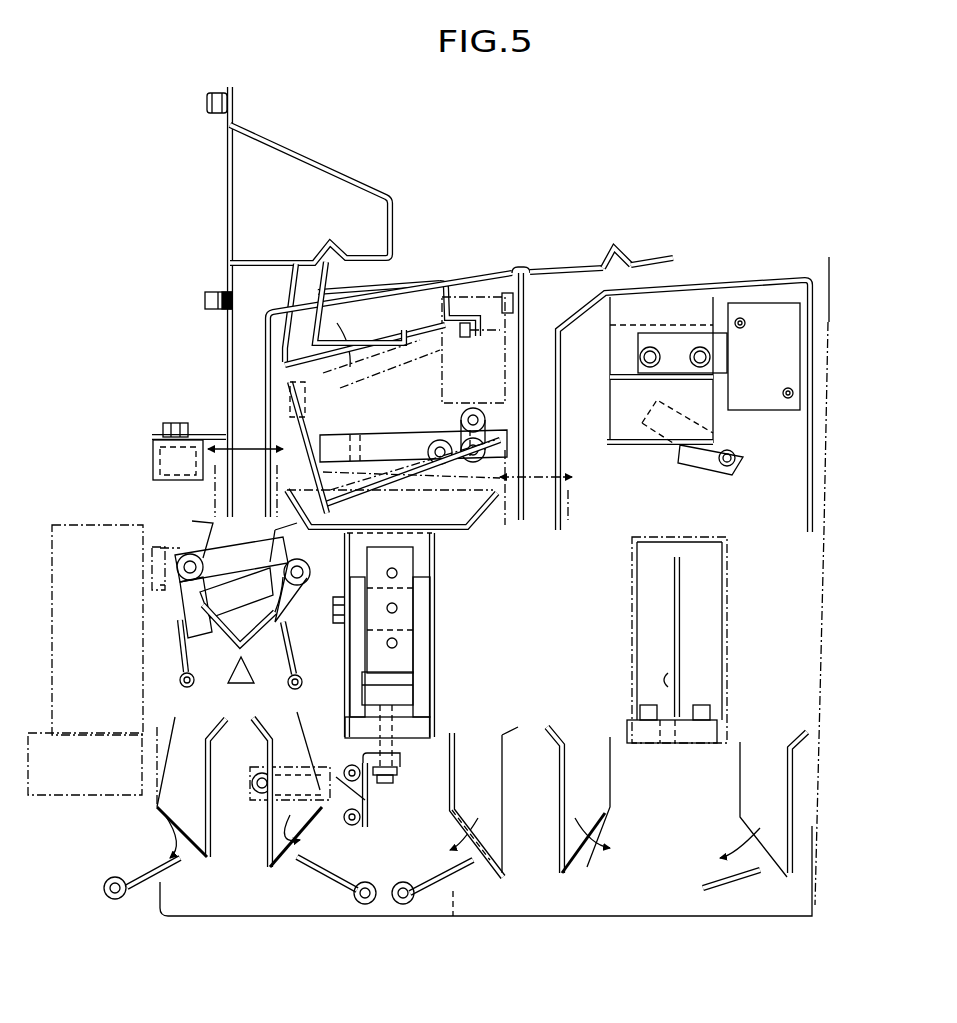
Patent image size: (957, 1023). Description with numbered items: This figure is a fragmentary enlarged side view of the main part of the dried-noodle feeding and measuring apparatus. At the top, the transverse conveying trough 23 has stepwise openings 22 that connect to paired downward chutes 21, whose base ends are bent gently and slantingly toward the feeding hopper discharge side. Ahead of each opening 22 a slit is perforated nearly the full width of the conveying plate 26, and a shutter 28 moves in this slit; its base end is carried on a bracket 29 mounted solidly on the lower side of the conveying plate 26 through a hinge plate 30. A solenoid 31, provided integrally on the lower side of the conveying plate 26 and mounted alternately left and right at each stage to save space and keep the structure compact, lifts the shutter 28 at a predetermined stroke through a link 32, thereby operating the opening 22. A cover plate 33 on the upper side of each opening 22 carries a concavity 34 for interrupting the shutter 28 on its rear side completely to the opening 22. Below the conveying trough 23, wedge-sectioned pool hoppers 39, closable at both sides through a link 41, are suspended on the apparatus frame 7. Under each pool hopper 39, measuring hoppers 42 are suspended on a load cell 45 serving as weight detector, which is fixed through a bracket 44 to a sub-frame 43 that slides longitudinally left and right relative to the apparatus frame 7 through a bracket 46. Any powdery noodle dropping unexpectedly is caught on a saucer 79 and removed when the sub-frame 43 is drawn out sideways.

The apparatus frame 7 is at (152, 447).
The downward chute 21 is at (557, 458).
The opening 22 is at (388, 277).
The transverse conveying trough 23 is at (573, 252).
The conveying plate 26 is at (492, 270).
The shutter 28 is at (282, 278).
The bracket 29 is at (443, 300).
The hinge plate 30 is at (433, 332).
The solenoid 31 is at (494, 376).
The link 32 is at (398, 450).
The cover plate 33 is at (660, 258).
The concavity 34 is at (618, 255).
The pool hopper 39 is at (203, 545).
The link 41 is at (177, 653).
The measuring hopper 42 is at (237, 682).
The sub-frame 43 is at (77, 790).
The bracket 44 is at (428, 728).
The load cell 45 is at (413, 610).
The bracket 46 is at (367, 790).
The saucer 79 is at (480, 517).